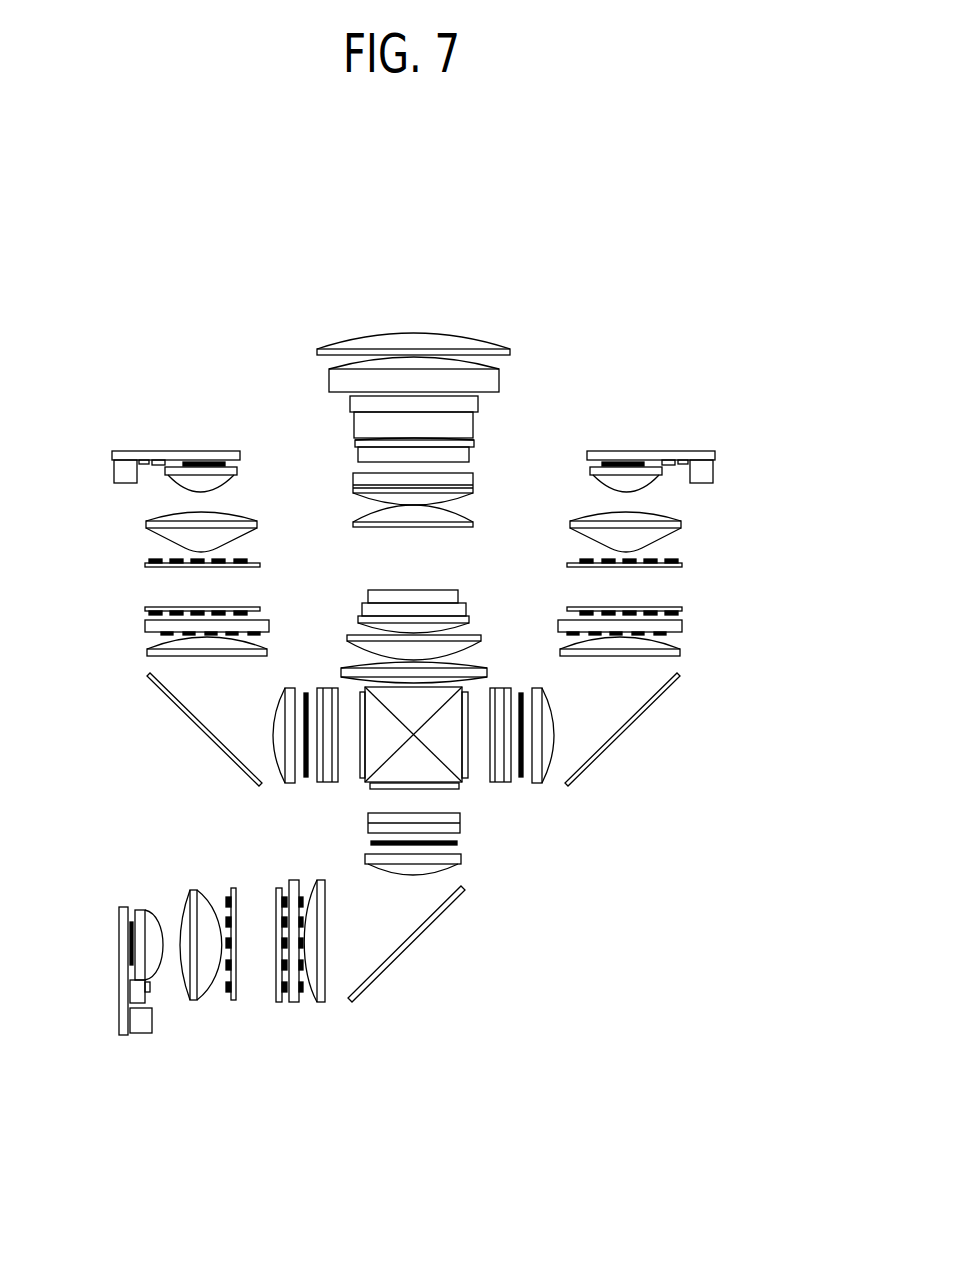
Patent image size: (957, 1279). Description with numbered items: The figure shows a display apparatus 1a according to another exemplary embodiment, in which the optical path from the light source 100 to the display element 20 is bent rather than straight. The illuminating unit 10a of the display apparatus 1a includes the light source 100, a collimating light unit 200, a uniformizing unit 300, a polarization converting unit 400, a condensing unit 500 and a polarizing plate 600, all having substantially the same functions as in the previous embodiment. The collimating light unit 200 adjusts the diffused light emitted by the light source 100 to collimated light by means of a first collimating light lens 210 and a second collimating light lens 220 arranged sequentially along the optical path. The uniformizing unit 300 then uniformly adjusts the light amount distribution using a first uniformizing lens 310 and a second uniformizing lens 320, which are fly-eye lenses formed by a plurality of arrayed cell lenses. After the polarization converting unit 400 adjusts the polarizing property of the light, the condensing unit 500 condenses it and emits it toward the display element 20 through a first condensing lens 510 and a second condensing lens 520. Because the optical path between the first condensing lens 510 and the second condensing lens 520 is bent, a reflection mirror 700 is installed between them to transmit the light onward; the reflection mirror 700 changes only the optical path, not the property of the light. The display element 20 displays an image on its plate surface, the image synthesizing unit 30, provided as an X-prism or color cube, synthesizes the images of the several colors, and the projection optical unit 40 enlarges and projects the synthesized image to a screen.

The display apparatus 1a is at (728, 321).
The illuminating unit 10a is at (151, 861).
The display element 20 is at (460, 823).
The image synthesizing unit 30 is at (395, 702).
The projection optical unit 40 is at (518, 432).
The light source 100 is at (132, 943).
The collimating light unit 200 is at (182, 1108).
The first collimating light lens 210 is at (148, 1012).
The second collimating light lens 220 is at (193, 1000).
The uniformizing unit 300 is at (285, 1108).
The first uniformizing lens 310 is at (234, 1000).
The second uniformizing lens 320 is at (280, 1002).
The polarization converting unit 400 is at (292, 878).
The condensing unit 500 is at (412, 1108).
The first condensing lens 510 is at (330, 1002).
The second condensing lens 520 is at (410, 870).
The polarizing plate 600 is at (457, 843).
The reflection mirror 700 is at (457, 903).